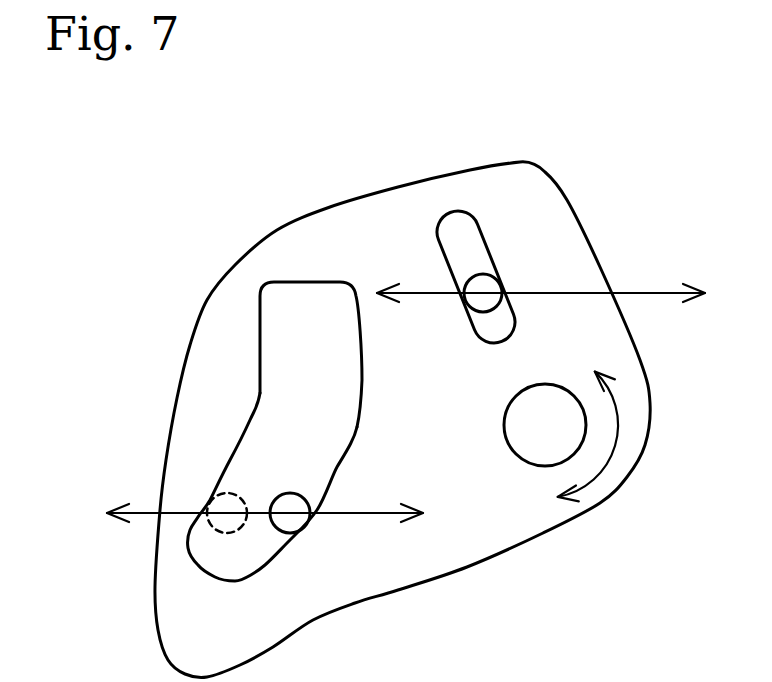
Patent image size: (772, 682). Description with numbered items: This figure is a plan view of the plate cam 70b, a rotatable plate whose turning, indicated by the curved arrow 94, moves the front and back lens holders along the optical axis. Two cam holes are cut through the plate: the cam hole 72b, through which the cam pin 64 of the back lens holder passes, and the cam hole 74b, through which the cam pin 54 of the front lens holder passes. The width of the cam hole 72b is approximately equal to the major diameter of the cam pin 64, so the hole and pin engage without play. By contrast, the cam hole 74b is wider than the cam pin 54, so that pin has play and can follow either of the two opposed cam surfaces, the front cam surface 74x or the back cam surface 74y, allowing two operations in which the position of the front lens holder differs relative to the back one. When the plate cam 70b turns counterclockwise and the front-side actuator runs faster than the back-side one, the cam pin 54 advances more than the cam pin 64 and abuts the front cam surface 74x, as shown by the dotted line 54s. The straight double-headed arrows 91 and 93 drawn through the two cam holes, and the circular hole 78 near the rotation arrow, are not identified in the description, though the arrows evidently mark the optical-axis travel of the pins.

The plate cam 70b is at (527, 118).
The cam hole 74b is at (275, 370).
The front cam surface 74x is at (262, 395).
The back cam surface 74y is at (343, 470).
The cam hole 72b is at (480, 253).
The cam pin 64 is at (490, 303).
The direction of movement of pin 93 is at (572, 293).
The pivot hole 78 is at (528, 463).
The arrow 94 is at (612, 457).
The direction of movement of pin 91 is at (177, 513).
The dotted line 54s is at (217, 533).
The cam pin 54 is at (283, 533).